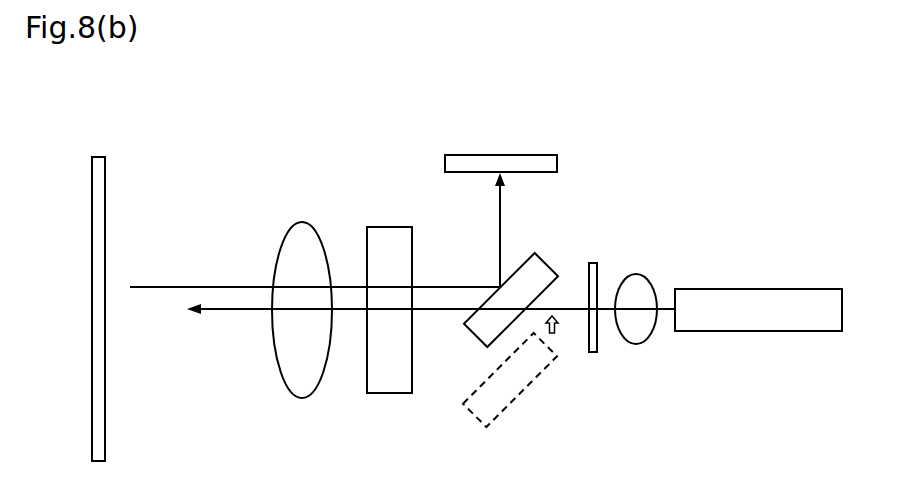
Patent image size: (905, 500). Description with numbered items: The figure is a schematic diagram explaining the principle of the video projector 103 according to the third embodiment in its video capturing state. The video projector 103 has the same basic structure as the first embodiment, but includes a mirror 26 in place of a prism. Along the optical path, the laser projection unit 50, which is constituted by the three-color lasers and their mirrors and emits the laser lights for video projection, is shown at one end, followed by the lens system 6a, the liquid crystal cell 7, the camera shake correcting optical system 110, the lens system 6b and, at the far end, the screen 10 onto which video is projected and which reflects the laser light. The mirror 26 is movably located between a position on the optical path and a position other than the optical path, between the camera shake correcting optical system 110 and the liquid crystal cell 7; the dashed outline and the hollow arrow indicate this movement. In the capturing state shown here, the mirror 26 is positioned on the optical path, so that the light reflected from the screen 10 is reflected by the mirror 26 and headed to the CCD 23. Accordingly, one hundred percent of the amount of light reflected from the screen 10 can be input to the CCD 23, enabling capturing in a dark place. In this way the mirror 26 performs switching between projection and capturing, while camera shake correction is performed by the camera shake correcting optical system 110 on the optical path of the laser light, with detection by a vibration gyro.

The video projector 103 is at (742, 140).
The screen 10 is at (103, 157).
The lens system 6b is at (310, 222).
The camera shake correcting optical system 110 is at (397, 393).
The CCD 23 is at (558, 163).
The mirror 26 is at (542, 257).
The liquid crystal cell 7 is at (594, 352).
The lens system 6a is at (647, 274).
The laser projection unit 50 is at (810, 289).